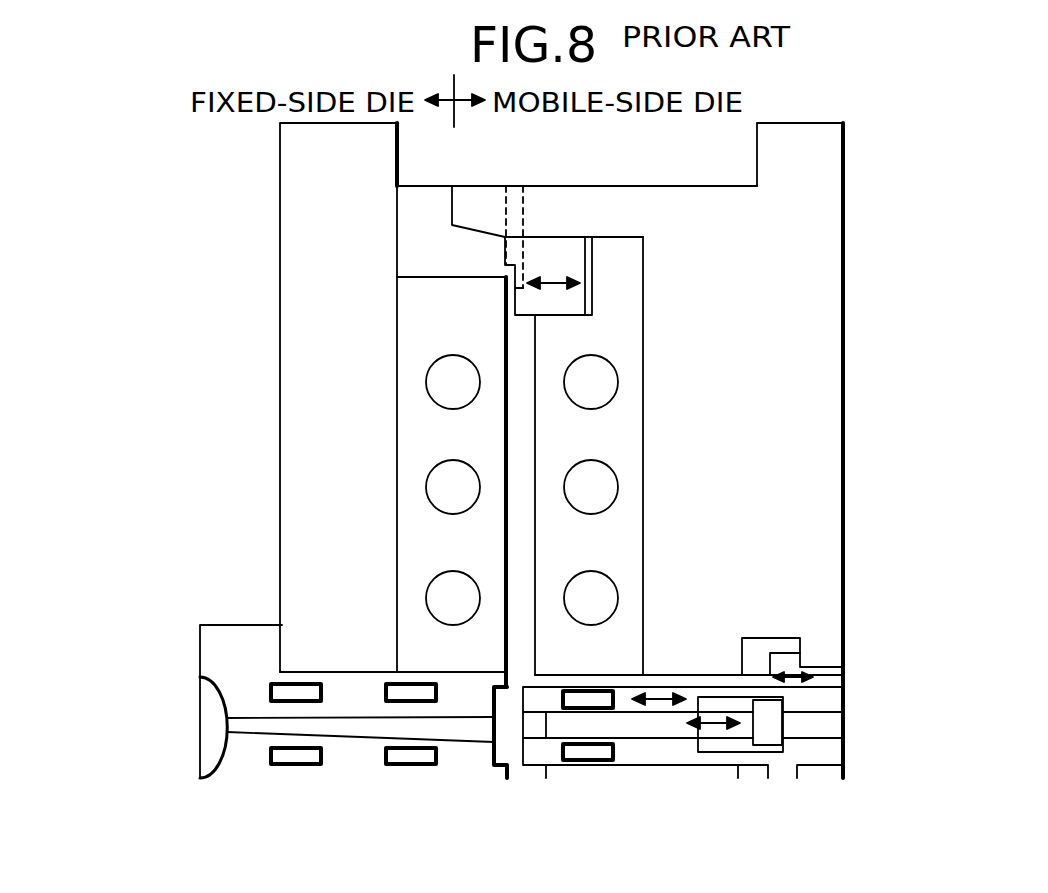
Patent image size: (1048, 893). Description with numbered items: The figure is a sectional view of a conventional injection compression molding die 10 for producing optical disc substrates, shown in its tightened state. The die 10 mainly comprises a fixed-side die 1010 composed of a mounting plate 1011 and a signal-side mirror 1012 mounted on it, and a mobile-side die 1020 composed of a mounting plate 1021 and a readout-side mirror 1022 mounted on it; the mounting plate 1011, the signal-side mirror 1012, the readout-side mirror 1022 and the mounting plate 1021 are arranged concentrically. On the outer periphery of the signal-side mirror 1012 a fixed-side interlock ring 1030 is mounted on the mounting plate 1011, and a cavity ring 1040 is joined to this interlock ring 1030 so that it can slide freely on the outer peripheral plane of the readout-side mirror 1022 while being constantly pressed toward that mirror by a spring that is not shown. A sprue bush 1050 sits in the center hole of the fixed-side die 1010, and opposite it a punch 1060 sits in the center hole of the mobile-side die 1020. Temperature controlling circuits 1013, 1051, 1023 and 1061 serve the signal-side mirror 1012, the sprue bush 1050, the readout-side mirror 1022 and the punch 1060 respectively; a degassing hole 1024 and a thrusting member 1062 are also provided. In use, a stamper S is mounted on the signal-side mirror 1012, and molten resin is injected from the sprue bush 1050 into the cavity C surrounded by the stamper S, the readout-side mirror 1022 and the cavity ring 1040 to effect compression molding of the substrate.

The injection compression molding die 10 is at (458, 778).
The fixed-side die 1010 is at (195, 347).
The mounting plate 1011 is at (300, 365).
The signal-side mirror 1012 is at (405, 410).
The temperature controlling circuit 1013 is at (440, 401).
The mobile-side die 1020 is at (940, 340).
The mounting plate 1021 is at (827, 357).
The readout-side mirror 1022 is at (625, 415).
The temperature controlling circuit 1023 is at (591, 508).
The degassing hole 1024 is at (509, 185).
The fixed-side interlock ring 1030 is at (412, 205).
The cavity ring 1040 is at (557, 243).
The sprue bush 1050 is at (234, 626).
The temperature controlling circuit 1051 is at (297, 766).
The punch 1060 is at (688, 697).
The temperature controlling circuit 1061 is at (583, 764).
The thrusting member 1062 is at (768, 710).
The stamper S is at (502, 301).
The cavity C is at (512, 538).